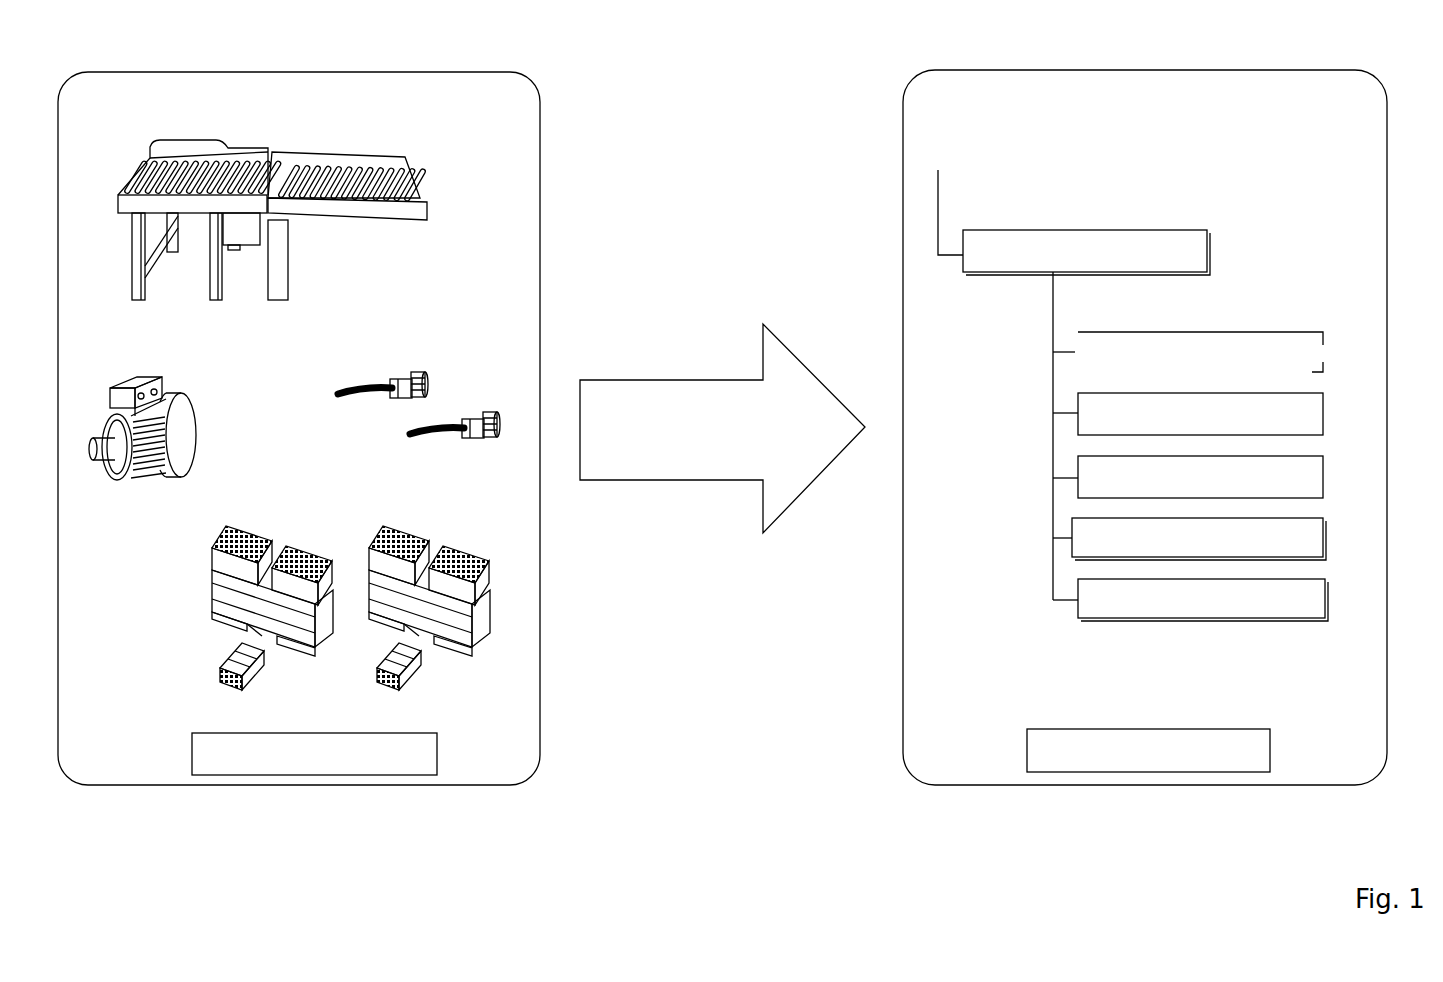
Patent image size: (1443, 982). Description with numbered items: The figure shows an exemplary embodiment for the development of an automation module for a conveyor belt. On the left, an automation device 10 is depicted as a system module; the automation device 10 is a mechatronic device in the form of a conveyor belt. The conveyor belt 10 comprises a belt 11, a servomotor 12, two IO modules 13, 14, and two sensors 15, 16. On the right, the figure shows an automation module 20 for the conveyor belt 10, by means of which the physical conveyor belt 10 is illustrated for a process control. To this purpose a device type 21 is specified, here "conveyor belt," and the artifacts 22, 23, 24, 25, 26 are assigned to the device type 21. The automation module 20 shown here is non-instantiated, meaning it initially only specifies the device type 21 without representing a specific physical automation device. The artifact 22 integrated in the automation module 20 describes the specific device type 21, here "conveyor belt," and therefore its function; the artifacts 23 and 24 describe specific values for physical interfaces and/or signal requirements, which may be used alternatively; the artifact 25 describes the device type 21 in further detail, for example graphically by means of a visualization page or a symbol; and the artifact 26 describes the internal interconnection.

The automation device 10 is at (553, 93).
The belt 11 is at (344, 142).
The servomotor 12 is at (137, 497).
The IO module 13 is at (287, 657).
The IO module 14 is at (438, 659).
The sensor 15 is at (376, 371).
The sensor 16 is at (455, 455).
The automation module 20 is at (1176, 61).
The device type 21 is at (1040, 224).
The artifact 22 is at (1324, 339).
The artifact 23 is at (1324, 409).
The artifact 24 is at (1324, 476).
The artifact 25 is at (1323, 525).
The artifact 26 is at (1325, 587).